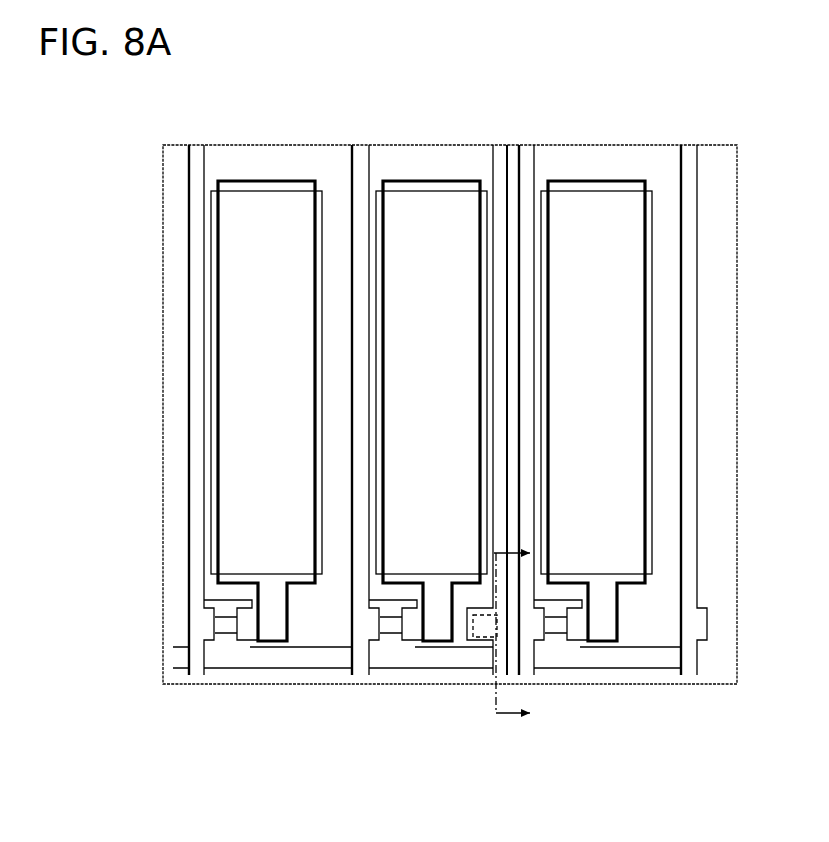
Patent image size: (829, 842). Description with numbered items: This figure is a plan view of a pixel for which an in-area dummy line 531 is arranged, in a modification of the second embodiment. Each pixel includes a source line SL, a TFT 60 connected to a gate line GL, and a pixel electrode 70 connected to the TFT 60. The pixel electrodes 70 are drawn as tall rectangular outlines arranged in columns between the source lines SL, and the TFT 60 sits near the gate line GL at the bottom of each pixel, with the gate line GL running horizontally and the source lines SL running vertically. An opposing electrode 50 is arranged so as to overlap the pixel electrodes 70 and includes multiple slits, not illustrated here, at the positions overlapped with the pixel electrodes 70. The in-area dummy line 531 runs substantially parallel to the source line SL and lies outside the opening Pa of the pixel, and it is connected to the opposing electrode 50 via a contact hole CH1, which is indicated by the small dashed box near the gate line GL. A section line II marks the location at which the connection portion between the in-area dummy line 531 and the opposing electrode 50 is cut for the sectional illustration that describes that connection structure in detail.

The source line SL is at (200, 158).
The in-area dummy line 531 is at (500, 160).
The opening Pa is at (211, 346).
The pixel electrode 70 is at (220, 262).
The TFT 60 is at (221, 634).
The gate line GL is at (181, 658).
The opposing electrode 50 is at (288, 686).
The contact hole CH1 is at (479, 640).
The section line II- II is at (520, 627).